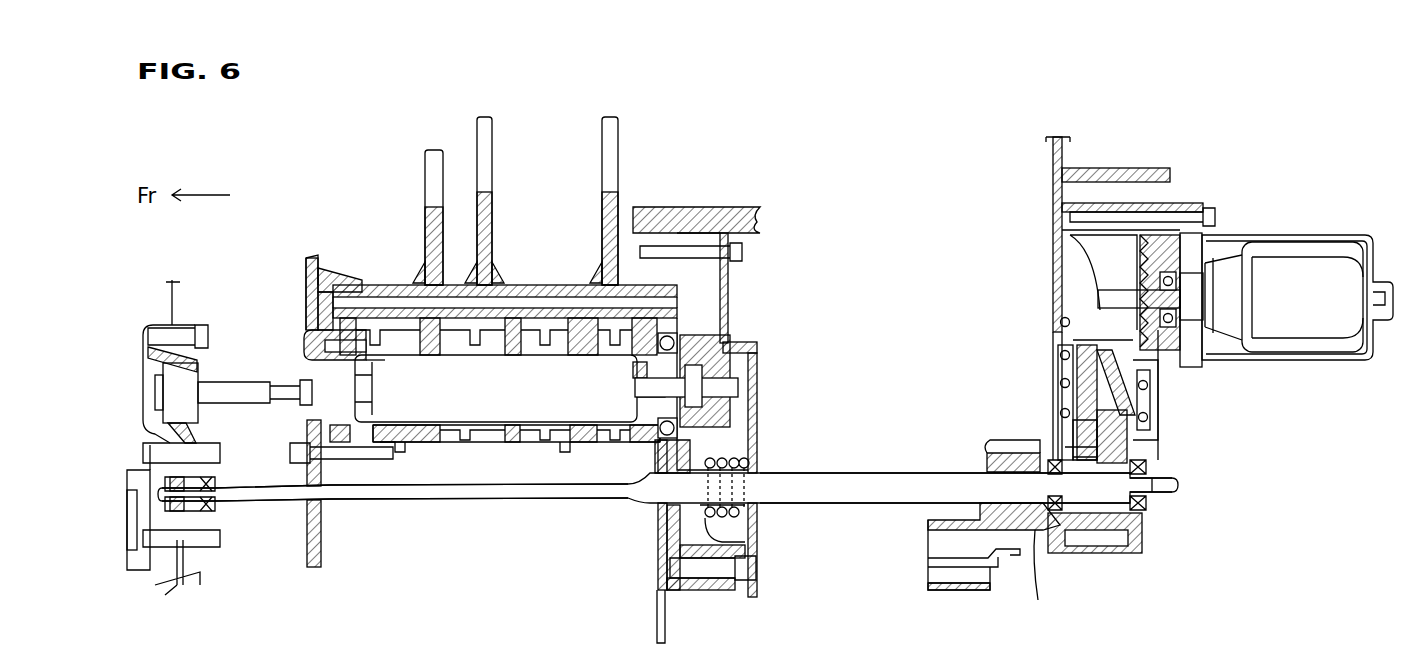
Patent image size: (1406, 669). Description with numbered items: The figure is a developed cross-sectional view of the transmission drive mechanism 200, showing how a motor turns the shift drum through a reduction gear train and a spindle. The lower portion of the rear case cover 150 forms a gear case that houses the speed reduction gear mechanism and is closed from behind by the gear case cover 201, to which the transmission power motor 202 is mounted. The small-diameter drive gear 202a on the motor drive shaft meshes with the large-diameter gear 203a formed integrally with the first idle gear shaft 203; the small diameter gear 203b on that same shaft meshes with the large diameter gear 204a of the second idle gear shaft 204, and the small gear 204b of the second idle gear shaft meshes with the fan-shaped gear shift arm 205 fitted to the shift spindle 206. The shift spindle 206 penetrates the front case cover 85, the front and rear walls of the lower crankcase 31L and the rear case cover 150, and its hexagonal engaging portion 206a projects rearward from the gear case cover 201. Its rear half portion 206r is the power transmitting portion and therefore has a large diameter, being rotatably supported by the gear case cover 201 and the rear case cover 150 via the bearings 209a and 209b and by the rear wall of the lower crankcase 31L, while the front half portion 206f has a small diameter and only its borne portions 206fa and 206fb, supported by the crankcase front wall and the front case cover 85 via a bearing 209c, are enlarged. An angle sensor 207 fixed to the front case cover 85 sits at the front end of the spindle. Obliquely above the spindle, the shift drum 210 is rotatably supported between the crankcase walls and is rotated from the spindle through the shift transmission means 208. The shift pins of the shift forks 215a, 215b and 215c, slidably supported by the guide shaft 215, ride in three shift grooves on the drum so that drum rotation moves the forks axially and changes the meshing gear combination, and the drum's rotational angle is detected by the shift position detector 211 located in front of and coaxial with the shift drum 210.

The drive unit 200 is at (719, 150).
The shift fork 215a is at (433, 150).
The shift fork 215b is at (497, 102).
The shift fork 215c is at (610, 117).
The guide shaft 215 is at (545, 285).
The shift drum 210 is at (487, 442).
The lower crankcase 31L is at (325, 552).
The shift transmission means 208 is at (772, 406).
The shift spindle 206 is at (793, 526).
The borne portion 206fb is at (215, 480).
The borne portion 206fa is at (325, 503).
The front half portion 206f is at (468, 500).
The rear half portion 206r is at (825, 505).
The engaging portion 206a is at (1170, 498).
The shift position detector 211 is at (175, 385).
The angle sensor 207 is at (135, 470).
The bearing 209c is at (222, 510).
The front case cover 85 is at (222, 530).
The gear case cover 201 is at (1160, 425).
The transmission power motor 202 is at (1305, 237).
The small-diameter drive gear 202a is at (1110, 282).
The first idle gear shaft 203 is at (1065, 340).
The large-diameter gear 203a is at (1075, 295).
The small diameter gear 203b is at (1088, 320).
The second idle gear shaft 204 is at (1058, 400).
The large diameter gear 204a is at (1070, 445).
The small gear 204b is at (1170, 393).
The gear shift arm 205 is at (1120, 440).
The bearing 209a is at (1160, 462).
The bearing 209b is at (1035, 560).
The rear case cover 150 is at (1082, 555).